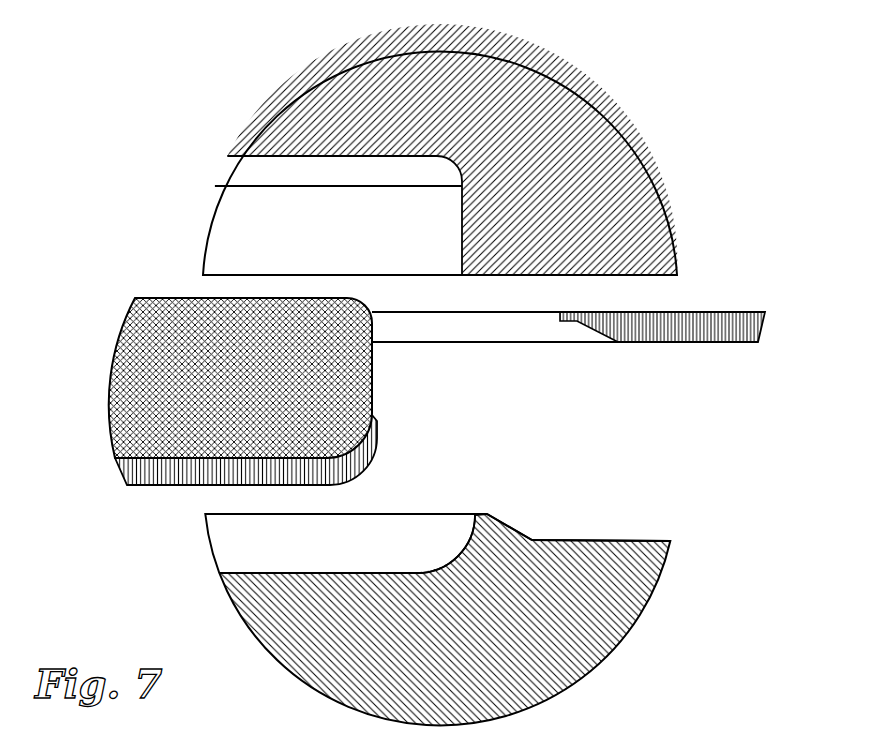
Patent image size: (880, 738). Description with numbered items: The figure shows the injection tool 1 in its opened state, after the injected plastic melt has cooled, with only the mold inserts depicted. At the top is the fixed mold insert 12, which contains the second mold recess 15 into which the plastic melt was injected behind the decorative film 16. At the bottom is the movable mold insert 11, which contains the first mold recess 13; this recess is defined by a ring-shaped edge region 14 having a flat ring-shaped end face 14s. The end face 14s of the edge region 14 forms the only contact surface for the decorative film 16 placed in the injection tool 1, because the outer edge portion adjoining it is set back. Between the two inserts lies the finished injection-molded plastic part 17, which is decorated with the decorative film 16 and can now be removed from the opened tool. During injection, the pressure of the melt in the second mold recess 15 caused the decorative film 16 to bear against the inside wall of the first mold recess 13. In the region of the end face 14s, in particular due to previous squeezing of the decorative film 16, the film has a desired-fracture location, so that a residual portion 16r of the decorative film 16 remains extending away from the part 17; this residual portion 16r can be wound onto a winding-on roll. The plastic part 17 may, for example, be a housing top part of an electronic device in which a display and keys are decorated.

The injection tool 1 is at (727, 138).
The movable mold insert 11 is at (597, 648).
The fixed mold insert 12 is at (602, 107).
The first mold recess 13 is at (230, 547).
The ring-shaped edge region 14 is at (467, 530).
The flat ring-shaped end face 14s is at (480, 513).
The second mold recess 15 is at (237, 225).
The decorative film 16 is at (376, 458).
The residual portion of the decorative film 16r is at (722, 323).
The injection-molded plastic part 17 is at (352, 393).